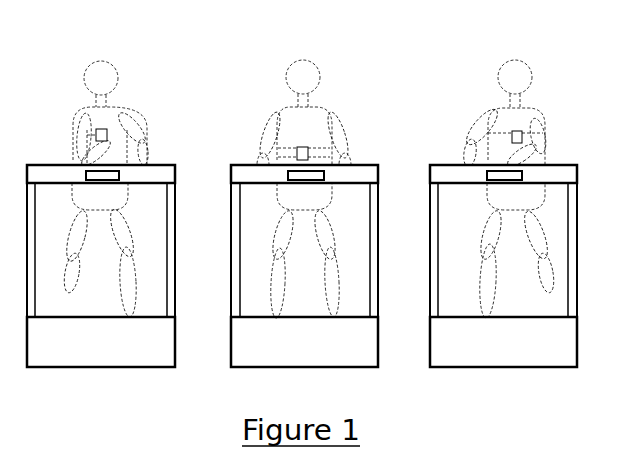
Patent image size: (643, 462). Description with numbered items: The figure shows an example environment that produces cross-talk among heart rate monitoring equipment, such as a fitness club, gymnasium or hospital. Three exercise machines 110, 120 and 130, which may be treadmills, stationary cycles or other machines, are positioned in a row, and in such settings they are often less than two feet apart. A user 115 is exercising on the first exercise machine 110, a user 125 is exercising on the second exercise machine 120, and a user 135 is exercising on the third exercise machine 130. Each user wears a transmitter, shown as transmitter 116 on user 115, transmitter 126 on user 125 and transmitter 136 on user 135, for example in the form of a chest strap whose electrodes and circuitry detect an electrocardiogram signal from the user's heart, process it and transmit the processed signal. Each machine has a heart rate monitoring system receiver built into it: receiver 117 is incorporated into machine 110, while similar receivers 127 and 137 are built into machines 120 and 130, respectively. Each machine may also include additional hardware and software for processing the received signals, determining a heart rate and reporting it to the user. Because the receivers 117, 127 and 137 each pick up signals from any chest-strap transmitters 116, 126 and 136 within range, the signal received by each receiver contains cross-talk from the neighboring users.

The exercise machine 110 is at (140, 367).
The user 115 is at (107, 63).
The transmitter 116 is at (101, 128).
The heart rate monitoring system receiver 117 is at (120, 175).
The exercise machine 120 is at (342, 368).
The user 125 is at (312, 62).
The transmitter 126 is at (303, 146).
The receiver 127 is at (325, 175).
The exercise machine 130 is at (540, 368).
The user 135 is at (522, 62).
The transmitter 136 is at (518, 130).
The receiver 137 is at (522, 175).